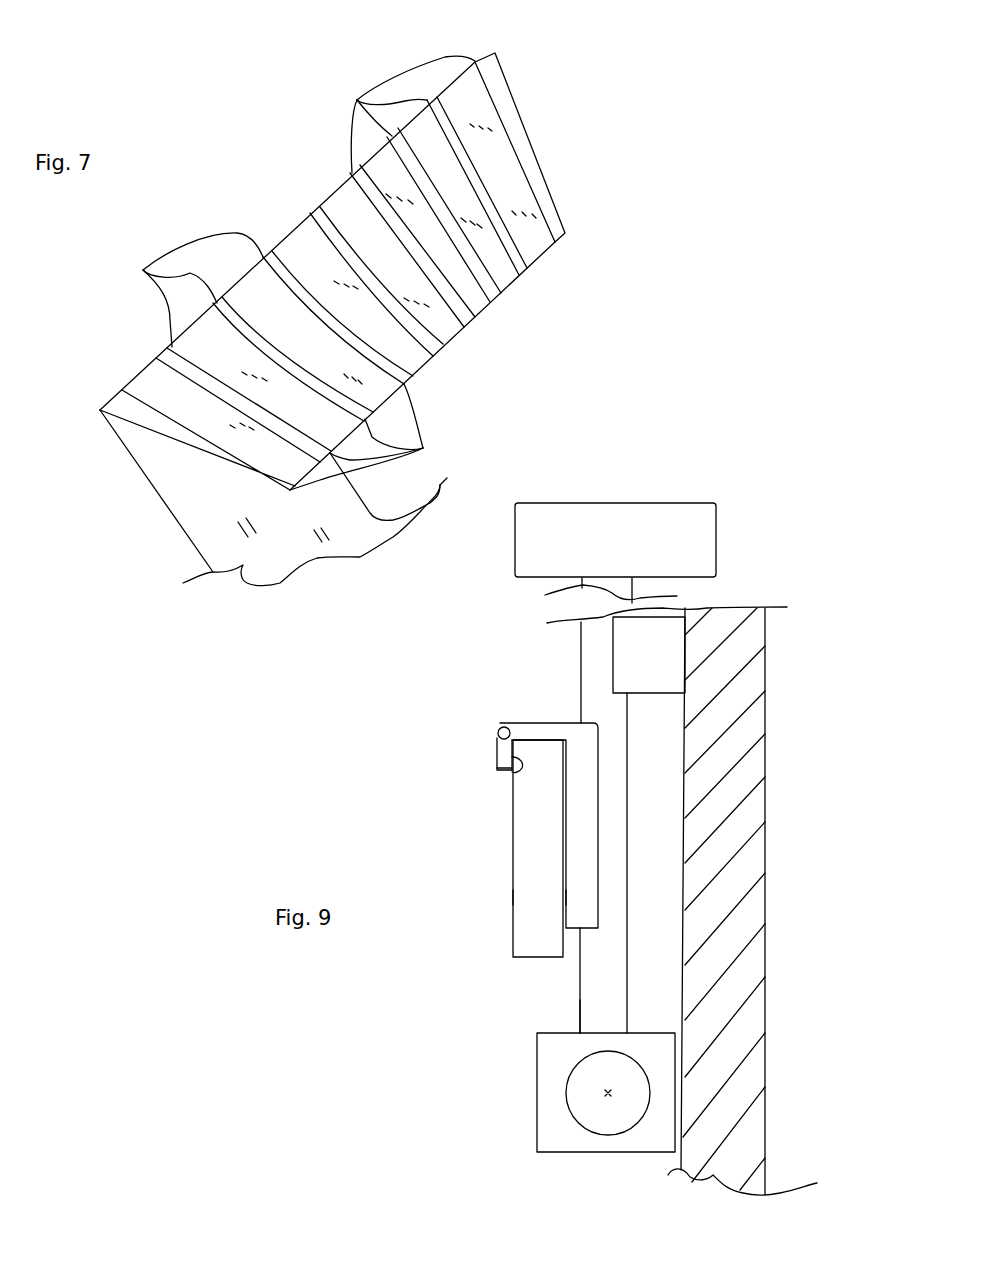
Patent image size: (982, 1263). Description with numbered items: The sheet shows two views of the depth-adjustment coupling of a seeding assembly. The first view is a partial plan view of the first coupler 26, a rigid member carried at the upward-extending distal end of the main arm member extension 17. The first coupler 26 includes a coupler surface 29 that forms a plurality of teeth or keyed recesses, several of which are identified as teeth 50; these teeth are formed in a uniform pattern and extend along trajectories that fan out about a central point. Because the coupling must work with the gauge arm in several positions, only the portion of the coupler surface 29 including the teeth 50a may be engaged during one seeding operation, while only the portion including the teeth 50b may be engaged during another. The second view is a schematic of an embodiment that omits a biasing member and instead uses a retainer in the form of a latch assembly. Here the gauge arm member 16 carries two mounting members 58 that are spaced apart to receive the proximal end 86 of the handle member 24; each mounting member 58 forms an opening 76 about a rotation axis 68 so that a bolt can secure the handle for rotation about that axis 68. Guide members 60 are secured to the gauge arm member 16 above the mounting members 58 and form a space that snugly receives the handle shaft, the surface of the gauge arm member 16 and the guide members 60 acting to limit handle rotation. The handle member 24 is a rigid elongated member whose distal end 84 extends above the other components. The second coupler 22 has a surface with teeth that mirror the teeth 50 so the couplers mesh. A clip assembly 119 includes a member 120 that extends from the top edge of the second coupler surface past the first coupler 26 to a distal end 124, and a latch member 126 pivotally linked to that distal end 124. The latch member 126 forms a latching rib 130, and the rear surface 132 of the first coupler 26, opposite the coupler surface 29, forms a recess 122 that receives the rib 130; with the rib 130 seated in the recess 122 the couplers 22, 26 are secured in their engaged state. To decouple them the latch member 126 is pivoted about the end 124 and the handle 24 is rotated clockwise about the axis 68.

In FIG. 7, the first coupler 26 is at (249, 181).
In FIG. 9, the first coupler 26 is at (523, 863).
In FIG. 7, the coupler surface 29 is at (443, 333).
In FIG. 7, the teeth 50 is at (194, 290).
In FIG. 7, the teeth 50a is at (379, 437).
In FIG. 7, the teeth 50b is at (405, 114).
In FIG. 7, the main arm member extension 17 is at (237, 573).
In FIG. 9, the gauge arm member 16 is at (750, 800).
In FIG. 9, the distal end 84 is at (660, 583).
In FIG. 9, the guide members 60 is at (650, 658).
In FIG. 9, the handle member 24 is at (565, 818).
In FIG. 9, the clip assembly 119 is at (548, 706).
In FIG. 9, the member 120 is at (527, 722).
In FIG. 9, the distal end 124 is at (500, 730).
In FIG. 9, the latch member 126 is at (497, 755).
In FIG. 9, the latching rib 130 is at (510, 767).
In FIG. 9, the recess 122 is at (503, 773).
In FIG. 9, the rear surface 132 is at (510, 898).
In FIG. 9, the second coupler 22 is at (580, 897).
In FIG. 9, the proximal end 86 is at (598, 1014).
In FIG. 9, the mounting members 58 is at (587, 1138).
In FIG. 9, the opening 76 is at (580, 1102).
In FIG. 9, the rotation axis 68 is at (603, 1092).